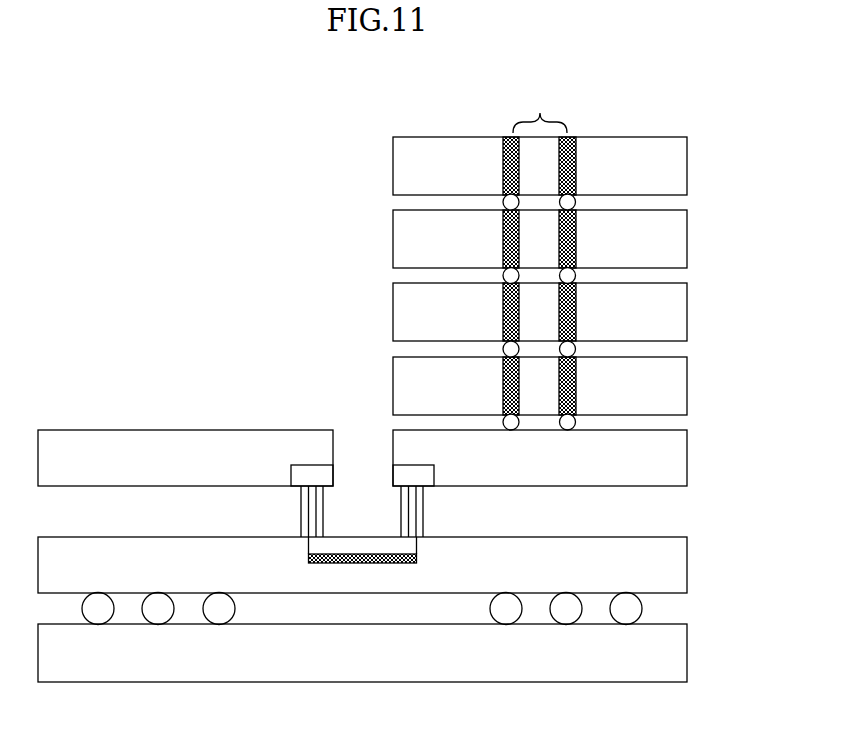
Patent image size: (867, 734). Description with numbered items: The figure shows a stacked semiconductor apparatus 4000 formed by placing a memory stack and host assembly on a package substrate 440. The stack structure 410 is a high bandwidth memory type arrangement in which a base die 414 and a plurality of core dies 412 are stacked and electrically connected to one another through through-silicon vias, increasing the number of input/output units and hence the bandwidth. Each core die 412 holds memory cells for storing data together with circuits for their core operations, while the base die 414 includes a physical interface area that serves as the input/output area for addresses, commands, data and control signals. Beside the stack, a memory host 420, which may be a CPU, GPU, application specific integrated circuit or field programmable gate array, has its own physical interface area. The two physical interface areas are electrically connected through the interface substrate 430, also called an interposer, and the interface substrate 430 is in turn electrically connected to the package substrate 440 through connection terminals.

The stacked semiconductor apparatus 4000 is at (626, 83).
The stack structure 410 is at (690, 148).
The core die 412 is at (393, 302).
The base die 414 is at (687, 486).
The memory host 420 is at (300, 430).
The interface substrate 430 is at (687, 565).
The package substrate 440 is at (687, 652).